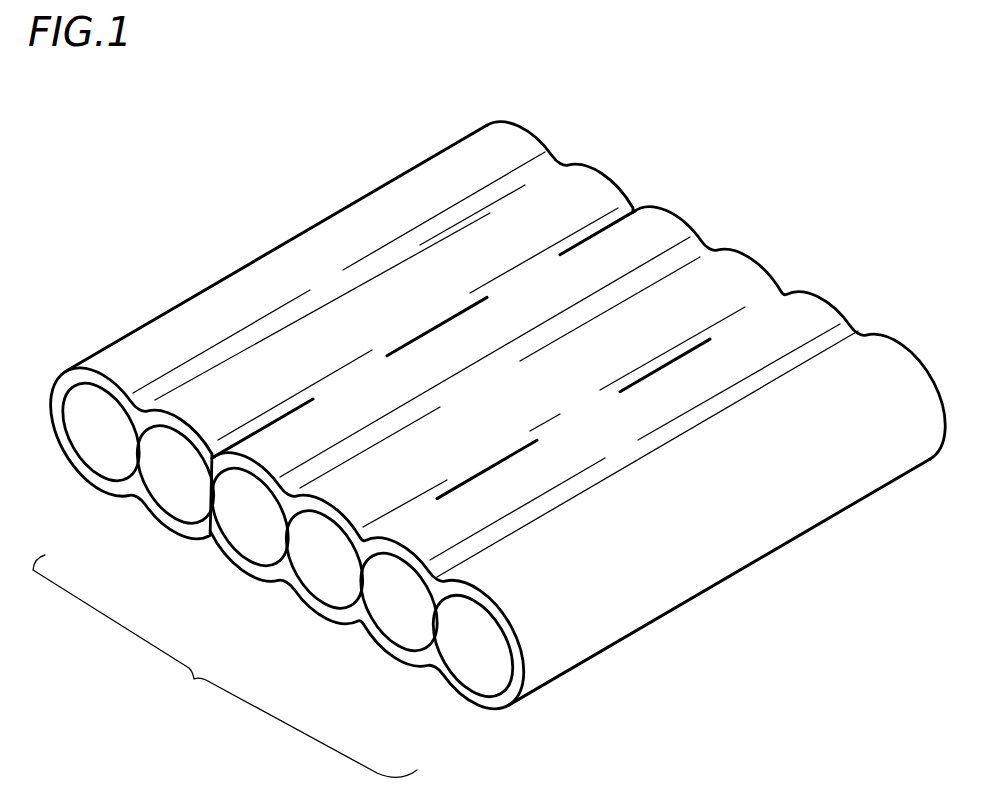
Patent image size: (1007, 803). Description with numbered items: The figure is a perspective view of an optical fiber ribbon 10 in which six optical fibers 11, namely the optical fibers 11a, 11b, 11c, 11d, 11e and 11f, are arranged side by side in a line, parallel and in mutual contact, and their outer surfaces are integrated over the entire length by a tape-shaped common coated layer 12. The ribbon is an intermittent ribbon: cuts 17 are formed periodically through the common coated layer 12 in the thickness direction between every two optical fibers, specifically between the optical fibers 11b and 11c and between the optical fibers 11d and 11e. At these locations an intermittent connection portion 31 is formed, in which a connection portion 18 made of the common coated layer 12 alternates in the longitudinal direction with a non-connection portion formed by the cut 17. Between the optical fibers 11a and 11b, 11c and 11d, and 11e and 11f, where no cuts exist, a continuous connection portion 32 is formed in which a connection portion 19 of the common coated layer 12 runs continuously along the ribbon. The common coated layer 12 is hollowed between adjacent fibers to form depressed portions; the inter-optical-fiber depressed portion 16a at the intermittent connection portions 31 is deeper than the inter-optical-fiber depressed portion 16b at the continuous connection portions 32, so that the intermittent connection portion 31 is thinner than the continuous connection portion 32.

The optical fiber ribbon 10 is at (739, 183).
The optical fibers 11 is at (192, 680).
The optical fiber 11a is at (103, 460).
The optical fiber 11b is at (182, 503).
The optical fiber 11c is at (250, 547).
The optical fiber 11d is at (322, 582).
The optical fiber 11e is at (393, 628).
The optical fiber 11f is at (462, 668).
The common coated layer 12 is at (485, 700).
The inter-optical-fiber depressed portion 16a is at (213, 447).
The inter-optical-fiber depressed portion 16b is at (143, 398).
The cut 17 is at (284, 410).
The connection portion 18 is at (510, 275).
The connection portion 19 is at (523, 180).
The intermittent connection portion 31 is at (633, 204).
The continuous connection portion 32 is at (553, 161).